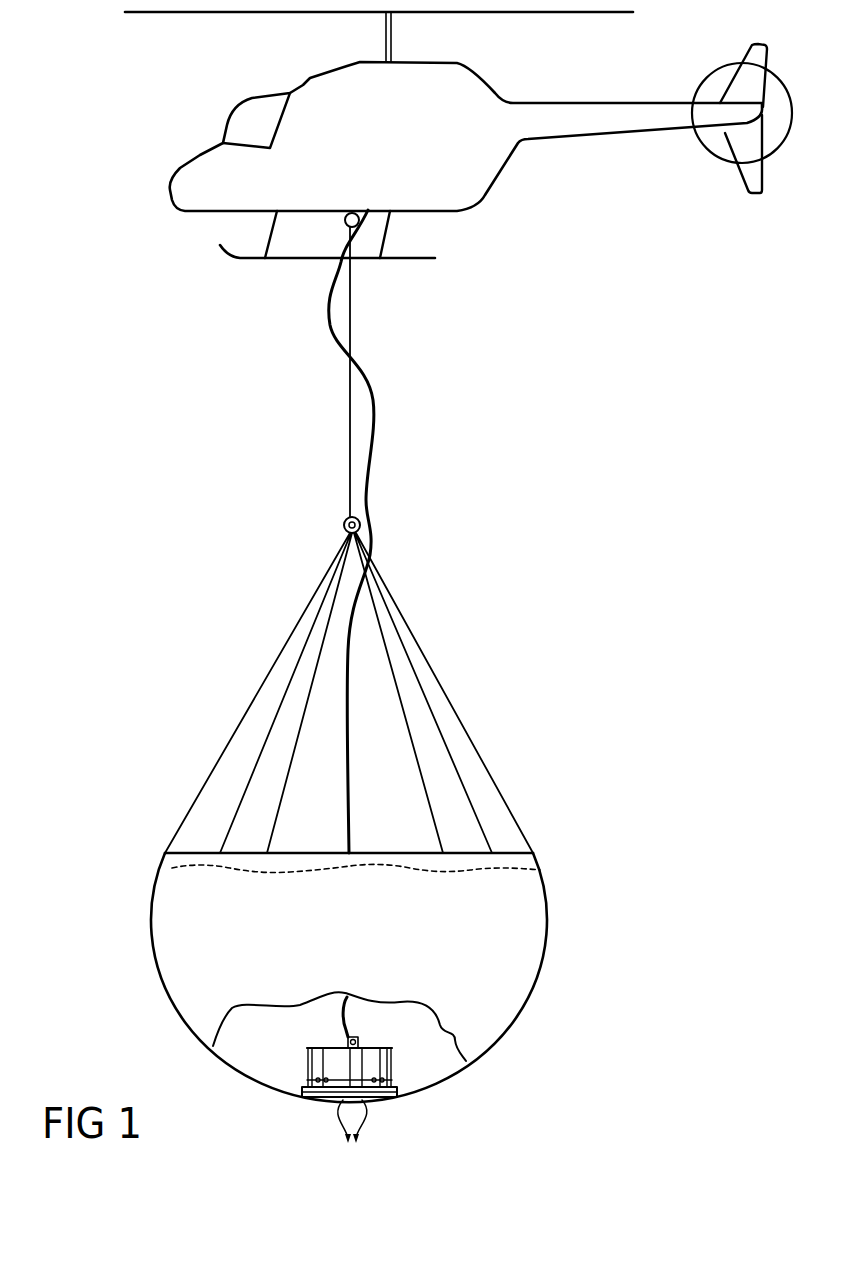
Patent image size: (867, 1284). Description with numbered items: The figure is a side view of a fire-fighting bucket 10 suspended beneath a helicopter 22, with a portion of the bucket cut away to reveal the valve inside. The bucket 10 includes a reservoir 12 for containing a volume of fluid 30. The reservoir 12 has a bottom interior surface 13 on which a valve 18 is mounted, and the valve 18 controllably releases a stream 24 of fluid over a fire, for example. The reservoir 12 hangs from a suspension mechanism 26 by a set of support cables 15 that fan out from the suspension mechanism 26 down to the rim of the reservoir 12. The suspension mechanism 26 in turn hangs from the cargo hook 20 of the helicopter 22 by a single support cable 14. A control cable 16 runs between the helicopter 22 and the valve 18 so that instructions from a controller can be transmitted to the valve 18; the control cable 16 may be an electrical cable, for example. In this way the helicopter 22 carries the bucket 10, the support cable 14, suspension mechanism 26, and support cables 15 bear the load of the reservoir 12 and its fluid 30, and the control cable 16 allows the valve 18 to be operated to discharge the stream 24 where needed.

The fire-fighting bucket 10 is at (574, 846).
The reservoir 12 is at (538, 970).
The bottom interior surface 13 is at (233, 1062).
The support cable 14 is at (349, 427).
The support cables 15 is at (470, 731).
The control cable 16 is at (373, 396).
The valve 18 is at (320, 1043).
The cargo hook 20 is at (345, 219).
The helicopter 22 is at (462, 207).
The stream of fluid 24 is at (352, 1134).
The suspension mechanism 26 is at (343, 524).
The fluid 30 is at (178, 870).